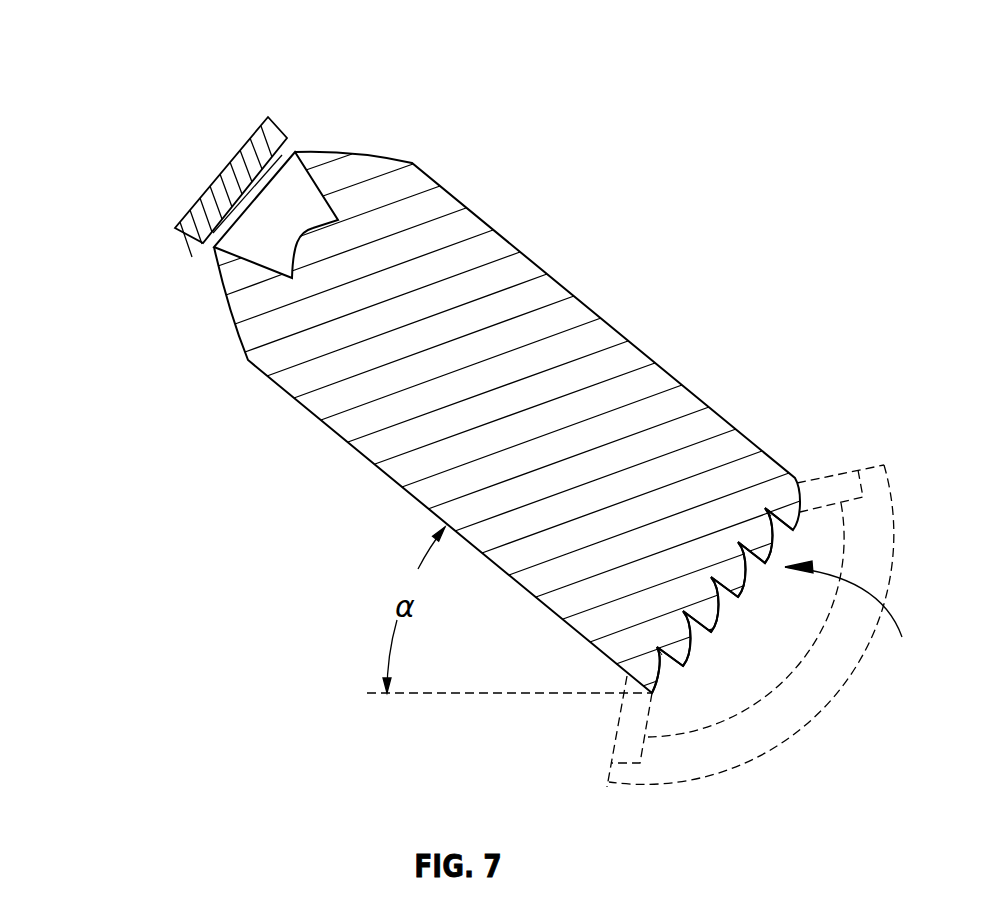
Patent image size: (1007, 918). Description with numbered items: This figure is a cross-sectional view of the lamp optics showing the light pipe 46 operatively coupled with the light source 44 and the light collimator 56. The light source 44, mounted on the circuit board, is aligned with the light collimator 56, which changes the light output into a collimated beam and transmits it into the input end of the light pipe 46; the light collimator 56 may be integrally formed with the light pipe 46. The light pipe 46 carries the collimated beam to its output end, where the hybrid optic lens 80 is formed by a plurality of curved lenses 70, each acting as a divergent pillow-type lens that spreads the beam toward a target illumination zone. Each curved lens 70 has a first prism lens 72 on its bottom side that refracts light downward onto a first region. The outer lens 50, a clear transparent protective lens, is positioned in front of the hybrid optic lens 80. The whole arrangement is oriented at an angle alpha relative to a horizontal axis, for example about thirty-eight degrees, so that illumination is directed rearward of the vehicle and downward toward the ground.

The light source 44 is at (285, 137).
The light collimator 56 is at (258, 238).
The light pipe 46 is at (608, 322).
The curved lenses 70 is at (745, 577).
The first prism lens 72 is at (784, 528).
The hybrid optic lens 80 is at (856, 612).
The outer lens 50 is at (885, 588).